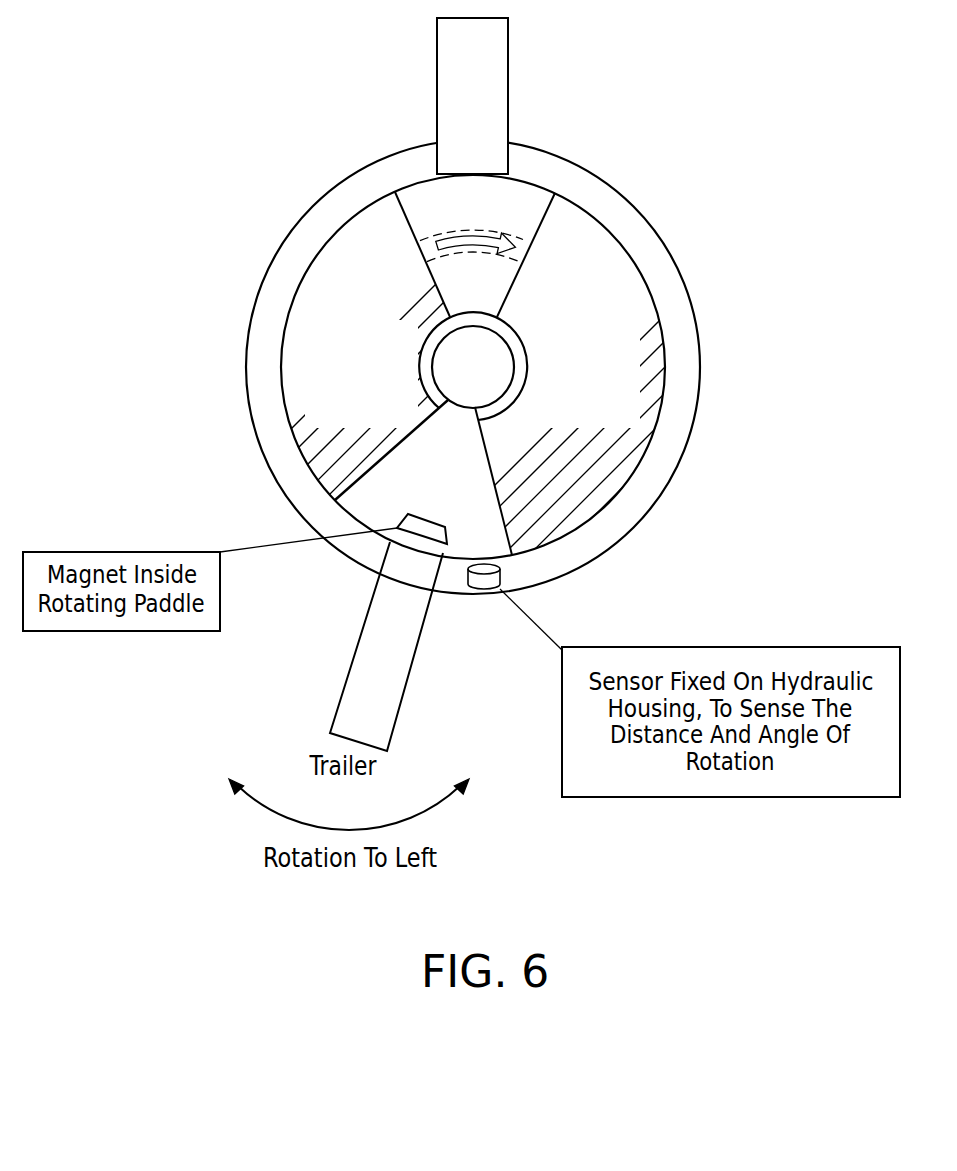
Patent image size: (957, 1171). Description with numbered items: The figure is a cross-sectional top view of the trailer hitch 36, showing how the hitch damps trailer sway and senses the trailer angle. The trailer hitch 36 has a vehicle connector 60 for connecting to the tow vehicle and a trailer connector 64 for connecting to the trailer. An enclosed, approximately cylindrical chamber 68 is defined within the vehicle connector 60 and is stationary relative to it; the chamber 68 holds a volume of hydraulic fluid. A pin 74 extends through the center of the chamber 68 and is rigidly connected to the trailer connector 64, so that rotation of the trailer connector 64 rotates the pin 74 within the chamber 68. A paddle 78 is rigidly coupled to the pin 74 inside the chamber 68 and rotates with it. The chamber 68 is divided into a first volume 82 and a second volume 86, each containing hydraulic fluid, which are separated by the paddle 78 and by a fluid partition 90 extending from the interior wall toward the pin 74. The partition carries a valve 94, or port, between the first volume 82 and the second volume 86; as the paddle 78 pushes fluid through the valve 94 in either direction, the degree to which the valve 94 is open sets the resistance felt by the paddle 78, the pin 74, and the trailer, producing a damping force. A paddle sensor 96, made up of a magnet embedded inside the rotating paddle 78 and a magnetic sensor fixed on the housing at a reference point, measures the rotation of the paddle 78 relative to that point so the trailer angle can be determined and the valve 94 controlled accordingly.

The trailer hitch 36 is at (628, 80).
The vehicle connector 60 is at (488, 92).
The trailer connector 64 is at (417, 657).
The chamber 68 is at (258, 370).
The pin 74 is at (488, 380).
The paddle 78 is at (353, 505).
The first volume 82 is at (335, 265).
The second volume 86 is at (623, 305).
The fluid partition 90 is at (428, 205).
The valve 94 is at (527, 258).
The paddle sensor 96 is at (388, 538).